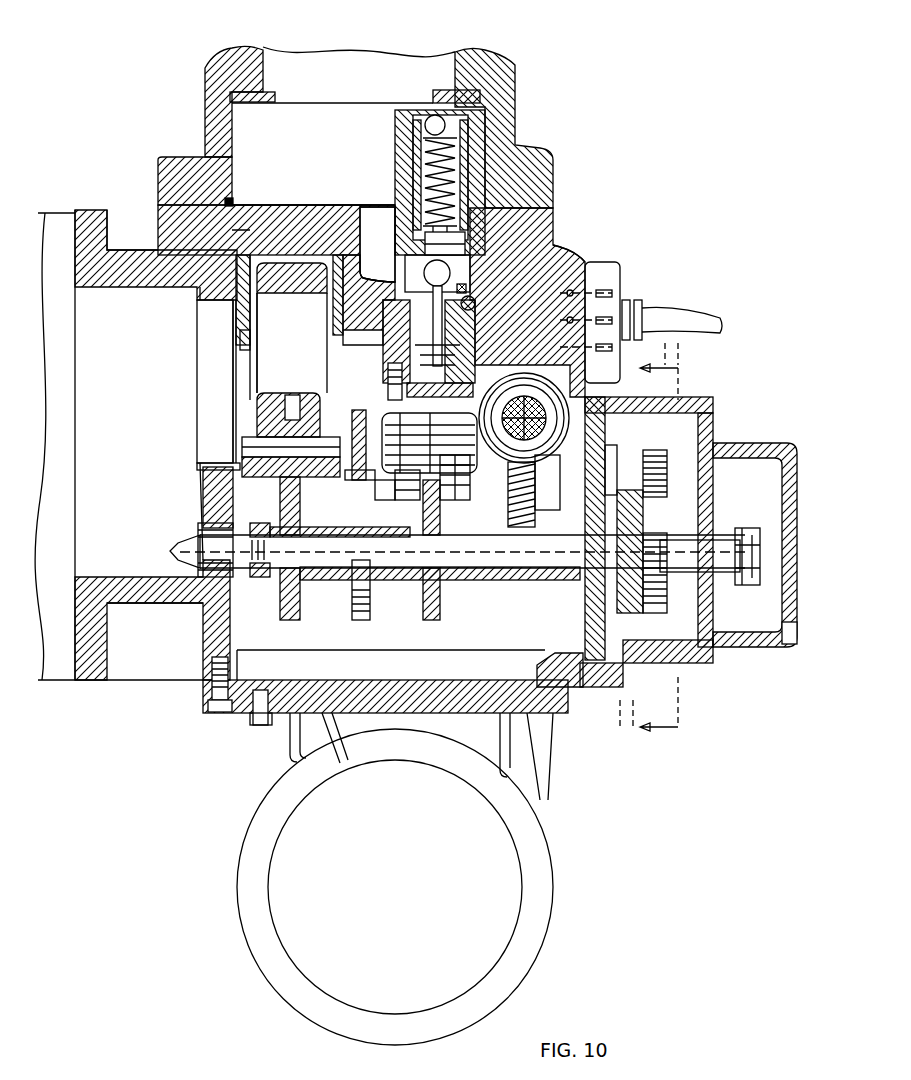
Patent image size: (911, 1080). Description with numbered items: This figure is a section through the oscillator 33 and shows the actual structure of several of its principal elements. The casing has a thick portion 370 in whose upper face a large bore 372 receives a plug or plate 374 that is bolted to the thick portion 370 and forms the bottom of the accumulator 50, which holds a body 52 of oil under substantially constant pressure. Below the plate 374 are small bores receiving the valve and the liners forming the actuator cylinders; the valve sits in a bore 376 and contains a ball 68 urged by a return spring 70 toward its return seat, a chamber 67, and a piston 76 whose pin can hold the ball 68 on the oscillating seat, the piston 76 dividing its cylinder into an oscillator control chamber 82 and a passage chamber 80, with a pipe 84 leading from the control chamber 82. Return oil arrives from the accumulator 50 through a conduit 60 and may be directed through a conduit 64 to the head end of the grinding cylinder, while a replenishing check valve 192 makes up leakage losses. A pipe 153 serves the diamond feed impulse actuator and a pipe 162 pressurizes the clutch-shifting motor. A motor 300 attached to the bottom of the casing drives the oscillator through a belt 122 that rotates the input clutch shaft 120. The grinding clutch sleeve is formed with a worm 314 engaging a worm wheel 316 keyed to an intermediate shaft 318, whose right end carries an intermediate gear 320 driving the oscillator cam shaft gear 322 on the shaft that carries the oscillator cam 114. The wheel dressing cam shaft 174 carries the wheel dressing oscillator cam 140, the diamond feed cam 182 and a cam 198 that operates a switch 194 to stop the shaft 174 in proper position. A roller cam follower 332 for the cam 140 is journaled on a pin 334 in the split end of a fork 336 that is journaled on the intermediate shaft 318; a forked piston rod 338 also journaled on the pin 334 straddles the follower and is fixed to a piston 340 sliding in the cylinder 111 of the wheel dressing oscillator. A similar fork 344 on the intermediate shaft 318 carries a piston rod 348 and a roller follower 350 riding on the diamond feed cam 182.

The oscillator 33 is at (564, 228).
The accumulator 50 is at (440, 52).
The body of oil 52 is at (332, 104).
The conduit 60 is at (372, 225).
The conduit 64 is at (475, 304).
The valve chamber 67 is at (470, 228).
The ball 68 is at (450, 272).
The return spring 70 is at (405, 125).
The piston 76 is at (430, 360).
The passage chamber 80 is at (466, 289).
The oscillator control chamber 82 is at (400, 376).
The pipe 84 is at (590, 323).
The cylinder 111 is at (245, 340).
The oscillator cam 114 is at (365, 615).
The input clutch shaft 120 is at (545, 424).
The belt 122 is at (548, 760).
The wheel dressing oscillator cam 140 is at (298, 615).
The pipe 153 is at (668, 315).
The pipe 162 is at (557, 262).
The wheel dressing cam shaft 174 is at (500, 570).
The diamond feed cam 182 is at (440, 605).
The replenishing check valve 192 is at (435, 115).
The switch 194 is at (722, 520).
The cam 198 is at (745, 585).
The motor 300 is at (525, 872).
The worm 314 is at (545, 412).
The worm wheel 316 is at (522, 515).
The intermediate shaft 318 is at (462, 470).
The intermediate gear 320 is at (655, 450).
The oscillator cam shaft gear 322 is at (660, 612).
The roller cam follower 332 is at (292, 398).
The pin 334 is at (320, 440).
The fork 336 is at (242, 423).
The forked piston rod 338 is at (275, 360).
The piston 340 is at (218, 414).
The fork 344 is at (360, 480).
The piston rod 348 is at (450, 480).
The roller follower 350 is at (415, 470).
The thick portion 370 is at (205, 275).
The large bore 372 is at (225, 200).
The plate 374 is at (257, 233).
The bore 376 is at (390, 338).